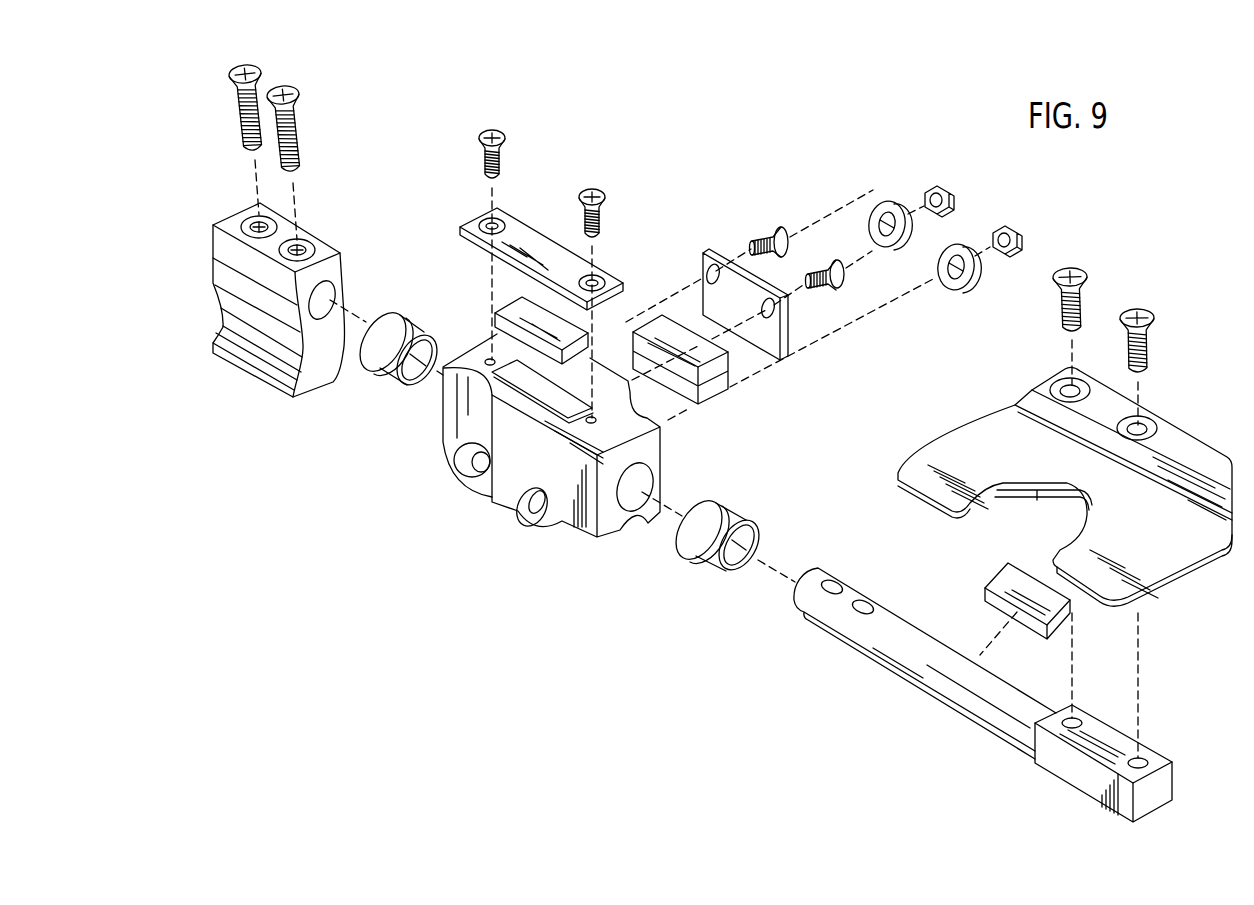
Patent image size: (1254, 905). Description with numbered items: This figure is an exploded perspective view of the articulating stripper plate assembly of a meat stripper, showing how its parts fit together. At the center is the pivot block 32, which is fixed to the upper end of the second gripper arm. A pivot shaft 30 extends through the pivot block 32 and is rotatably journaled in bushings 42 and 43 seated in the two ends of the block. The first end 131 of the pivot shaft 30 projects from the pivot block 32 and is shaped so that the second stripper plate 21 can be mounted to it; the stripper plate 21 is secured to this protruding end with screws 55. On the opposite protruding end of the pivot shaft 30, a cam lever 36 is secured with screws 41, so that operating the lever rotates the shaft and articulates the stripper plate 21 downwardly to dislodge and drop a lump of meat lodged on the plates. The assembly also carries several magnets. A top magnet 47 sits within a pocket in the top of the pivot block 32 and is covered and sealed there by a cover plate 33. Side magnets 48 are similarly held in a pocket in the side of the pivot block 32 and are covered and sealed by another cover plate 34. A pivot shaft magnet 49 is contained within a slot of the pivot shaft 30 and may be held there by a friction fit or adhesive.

The second stripper plate 21 is at (1167, 545).
The pivot shaft 30 is at (867, 689).
The pivot block 32 is at (520, 470).
The cover plate 33 is at (525, 237).
The cover plate 34 is at (772, 330).
The cam lever 36 is at (232, 275).
The screws 41 is at (262, 67).
The bushing 42 is at (697, 528).
The bushing 43 is at (393, 355).
The top magnet 47 is at (515, 310).
The side magnets 48 is at (727, 365).
The pivot shaft magnet 49 is at (1008, 578).
The screws 55 is at (1087, 268).
The first end of the pivot shaft 131 is at (1063, 760).